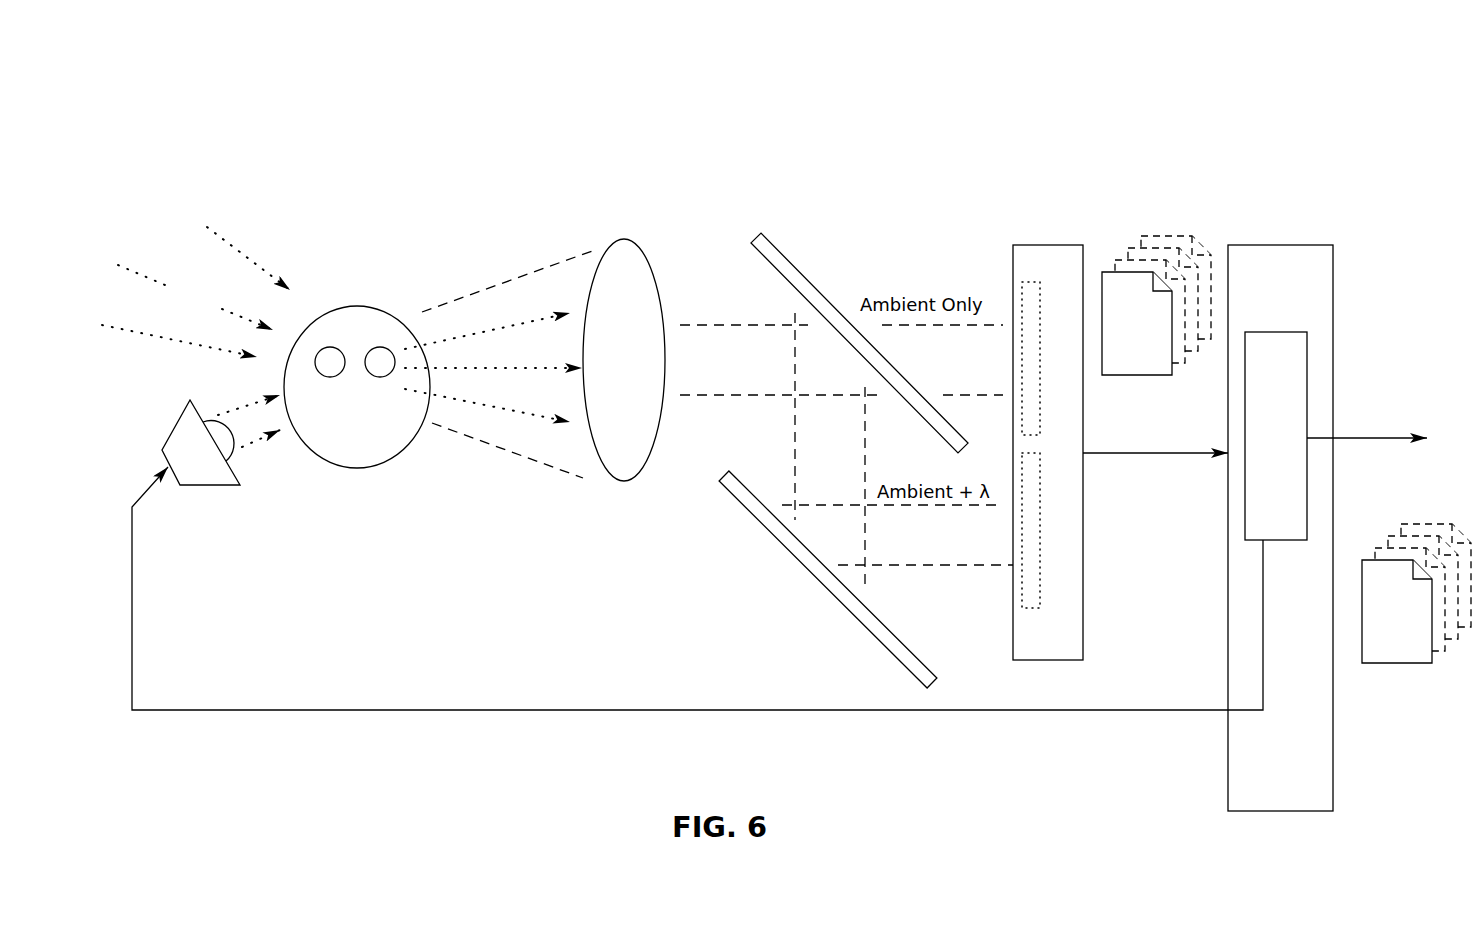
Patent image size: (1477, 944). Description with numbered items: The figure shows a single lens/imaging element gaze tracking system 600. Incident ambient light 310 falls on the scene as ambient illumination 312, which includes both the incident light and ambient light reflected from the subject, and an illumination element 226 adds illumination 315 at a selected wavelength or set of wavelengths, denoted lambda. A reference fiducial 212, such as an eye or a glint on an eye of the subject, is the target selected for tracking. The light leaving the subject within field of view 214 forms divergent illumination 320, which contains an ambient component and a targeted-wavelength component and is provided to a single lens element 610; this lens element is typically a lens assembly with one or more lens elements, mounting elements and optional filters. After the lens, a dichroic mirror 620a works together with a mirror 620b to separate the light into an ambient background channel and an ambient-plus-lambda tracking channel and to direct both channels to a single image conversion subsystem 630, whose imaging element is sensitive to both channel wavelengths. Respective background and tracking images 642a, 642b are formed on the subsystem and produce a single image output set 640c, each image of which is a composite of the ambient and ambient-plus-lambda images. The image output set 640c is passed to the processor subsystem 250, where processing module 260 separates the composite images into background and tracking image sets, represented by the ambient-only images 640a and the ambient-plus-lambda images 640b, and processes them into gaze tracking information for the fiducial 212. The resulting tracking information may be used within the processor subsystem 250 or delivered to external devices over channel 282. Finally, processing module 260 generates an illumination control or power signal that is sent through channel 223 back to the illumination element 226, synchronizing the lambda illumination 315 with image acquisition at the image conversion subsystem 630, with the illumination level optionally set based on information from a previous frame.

The single lens/imaging element gaze tracking system 600 is at (620, 130).
The incident ambient light 310 is at (163, 197).
The ambient illumination 312 is at (213, 310).
The reference fiducial 212 is at (365, 337).
The illumination element 226 is at (190, 400).
The illumination at selected wavelength 315 is at (292, 475).
The field of view 214 is at (540, 252).
The illumination 320 is at (520, 381).
The single lens element 610 is at (620, 240).
The dichroic mirror 620a is at (752, 232).
The mirror 620b is at (722, 467).
The image conversion subsystem 630 is at (1067, 656).
The background image 642a is at (1025, 280).
The tracking image 642b is at (1020, 583).
The image output set 640c is at (1118, 248).
The ambient-only image frames 640a is at (1290, 365).
The ambient plus lambda image frames 640b is at (1307, 502).
The processor subsystem 250 is at (1275, 800).
The processing module 260 is at (1290, 536).
The channel 282 is at (1375, 435).
The channel 223 is at (410, 708).